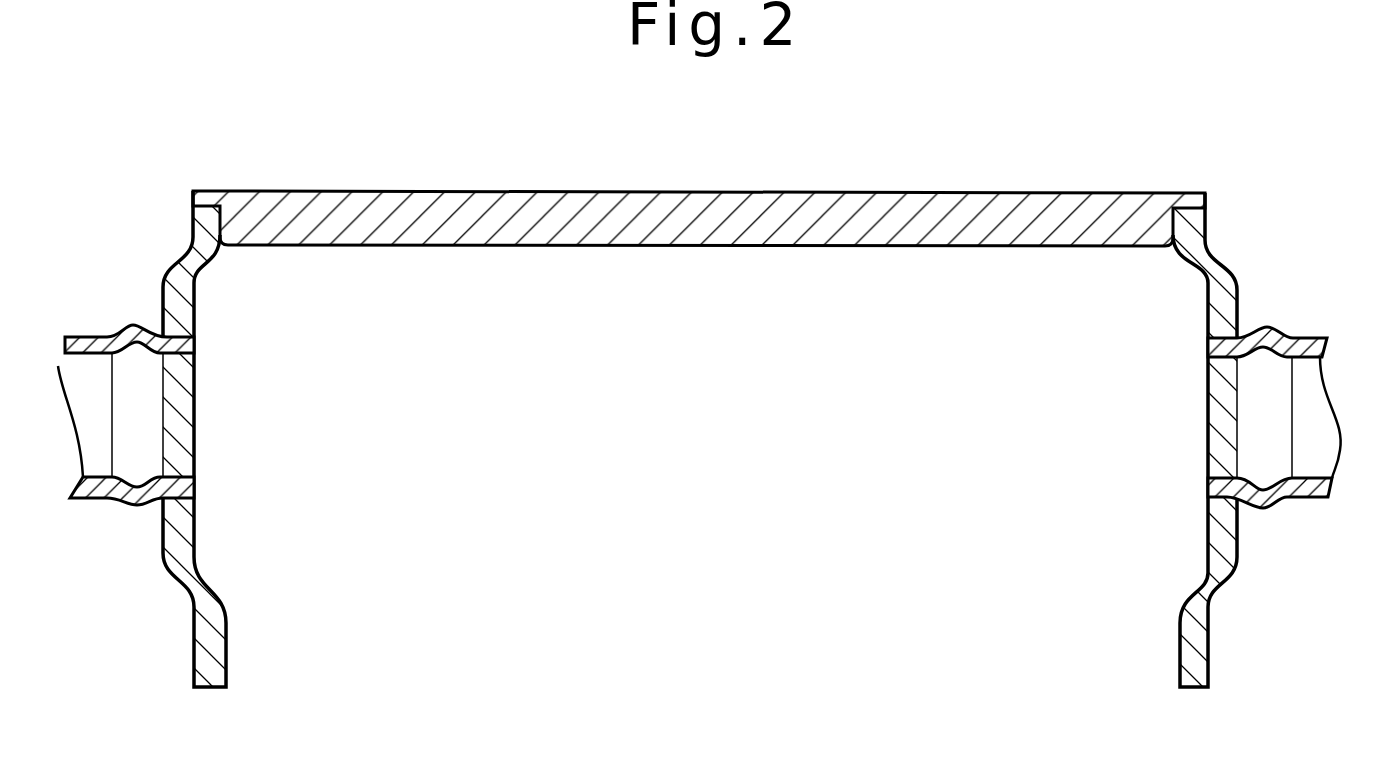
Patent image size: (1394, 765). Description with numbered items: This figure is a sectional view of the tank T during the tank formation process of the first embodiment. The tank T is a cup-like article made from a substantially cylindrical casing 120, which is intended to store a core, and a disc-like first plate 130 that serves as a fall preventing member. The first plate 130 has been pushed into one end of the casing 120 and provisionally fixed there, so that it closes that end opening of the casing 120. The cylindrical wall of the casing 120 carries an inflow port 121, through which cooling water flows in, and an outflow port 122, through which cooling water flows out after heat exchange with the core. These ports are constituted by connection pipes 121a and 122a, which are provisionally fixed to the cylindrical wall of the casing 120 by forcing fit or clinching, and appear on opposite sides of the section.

The tank T is at (163, 212).
The first plate 130 is at (1107, 203).
The casing 120 is at (1237, 312).
The inflow port 121 is at (68, 374).
The connection pipe 121a is at (98, 337).
The outflow port 122 is at (1280, 465).
The connection pipe 122a is at (1300, 345).